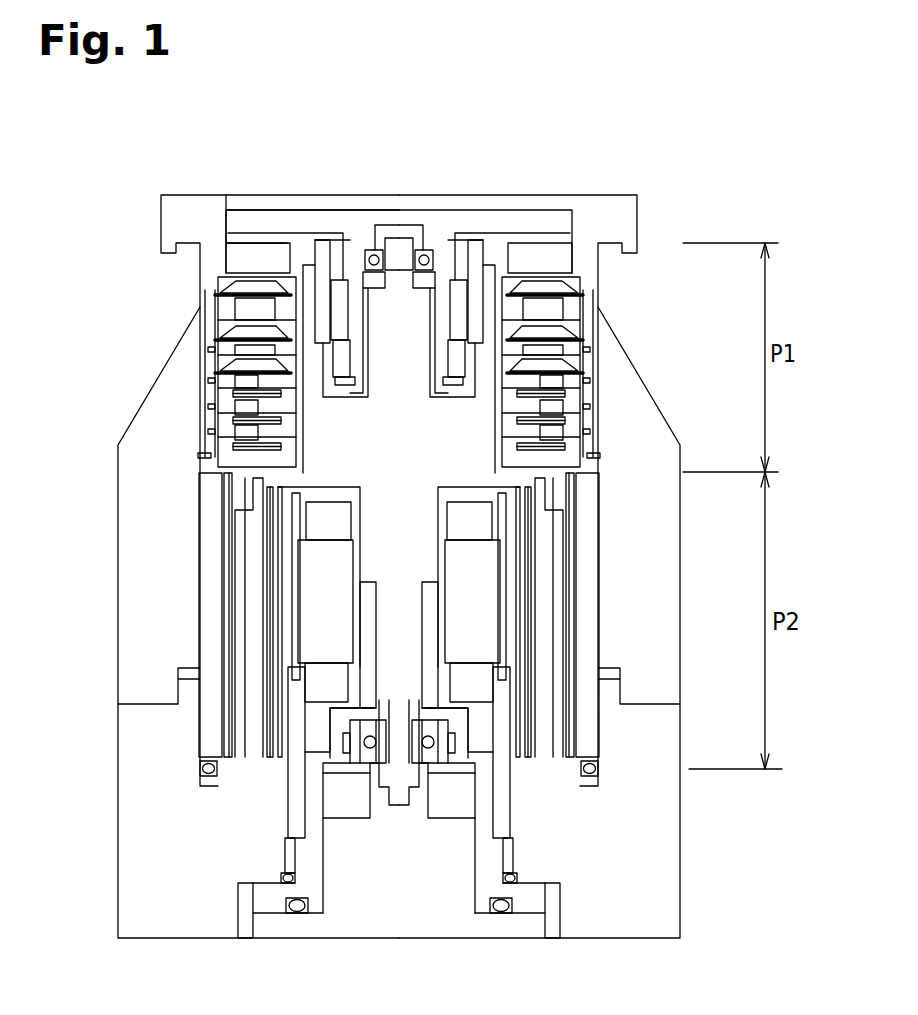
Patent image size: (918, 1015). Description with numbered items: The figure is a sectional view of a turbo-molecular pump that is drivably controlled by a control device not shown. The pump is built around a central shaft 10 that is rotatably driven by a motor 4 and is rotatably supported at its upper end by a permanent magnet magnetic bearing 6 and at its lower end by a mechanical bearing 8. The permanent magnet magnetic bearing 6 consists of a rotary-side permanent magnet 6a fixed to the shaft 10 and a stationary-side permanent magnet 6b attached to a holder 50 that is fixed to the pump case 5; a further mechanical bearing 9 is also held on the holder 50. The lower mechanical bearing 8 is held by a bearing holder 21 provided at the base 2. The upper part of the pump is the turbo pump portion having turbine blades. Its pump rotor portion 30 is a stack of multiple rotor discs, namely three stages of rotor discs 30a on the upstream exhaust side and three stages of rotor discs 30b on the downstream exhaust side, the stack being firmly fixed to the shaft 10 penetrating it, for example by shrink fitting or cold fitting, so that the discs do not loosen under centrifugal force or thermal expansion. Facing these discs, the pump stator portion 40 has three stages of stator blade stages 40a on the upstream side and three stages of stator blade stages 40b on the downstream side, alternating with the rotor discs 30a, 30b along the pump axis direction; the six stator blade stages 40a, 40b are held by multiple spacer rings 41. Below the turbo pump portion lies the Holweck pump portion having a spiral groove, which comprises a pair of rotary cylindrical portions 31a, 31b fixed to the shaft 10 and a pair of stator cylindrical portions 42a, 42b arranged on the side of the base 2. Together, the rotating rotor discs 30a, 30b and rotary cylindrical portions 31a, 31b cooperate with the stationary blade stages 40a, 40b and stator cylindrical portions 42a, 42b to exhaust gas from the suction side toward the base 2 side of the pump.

The base 2 is at (654, 778).
The motor 4 is at (318, 633).
The pump case 5 is at (654, 639).
The permanent magnet magnetic bearing 6 is at (505, 138).
The rotary-side permanent magnet 6a is at (477, 285).
The stationary-side permanent magnet 6b is at (457, 283).
The mechanical bearing 8 is at (370, 742).
The mechanical bearing 9 is at (368, 250).
The shaft 10 is at (398, 312).
The bearing holder 21 is at (483, 797).
The pump rotor portion 30 is at (68, 240).
The rotor discs 30a is at (235, 348).
The rotor discs 30b is at (243, 433).
The rotary cylindrical portion 31a is at (228, 525).
The rotary cylindrical portion 31b is at (272, 605).
The pump stator portion 40 is at (713, 275).
The stator blade stages 40a is at (557, 363).
The stator blade stages 40b is at (563, 443).
The spacer rings 41 is at (588, 437).
The stator cylindrical portion 42a is at (588, 532).
The stator cylindrical portion 42b is at (548, 605).
The holder 50 is at (316, 221).